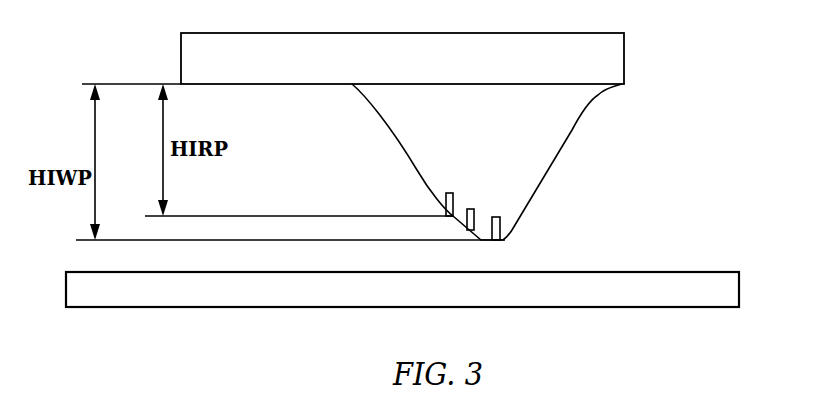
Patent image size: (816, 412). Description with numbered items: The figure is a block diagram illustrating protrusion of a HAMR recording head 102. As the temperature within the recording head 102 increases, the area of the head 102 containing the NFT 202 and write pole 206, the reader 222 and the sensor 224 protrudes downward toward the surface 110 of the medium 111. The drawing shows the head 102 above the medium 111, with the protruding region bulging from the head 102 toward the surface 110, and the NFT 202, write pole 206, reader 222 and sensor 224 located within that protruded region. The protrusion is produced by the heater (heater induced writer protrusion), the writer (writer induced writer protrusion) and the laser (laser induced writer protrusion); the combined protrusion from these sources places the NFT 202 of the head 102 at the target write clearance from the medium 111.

The recording head 102 is at (585, 58).
The NFT 202 is at (518, 162).
The write pole 206 is at (502, 214).
The reader 222 is at (450, 193).
The sensor 224 is at (467, 221).
The surface 110 is at (663, 272).
The medium 111 is at (420, 300).